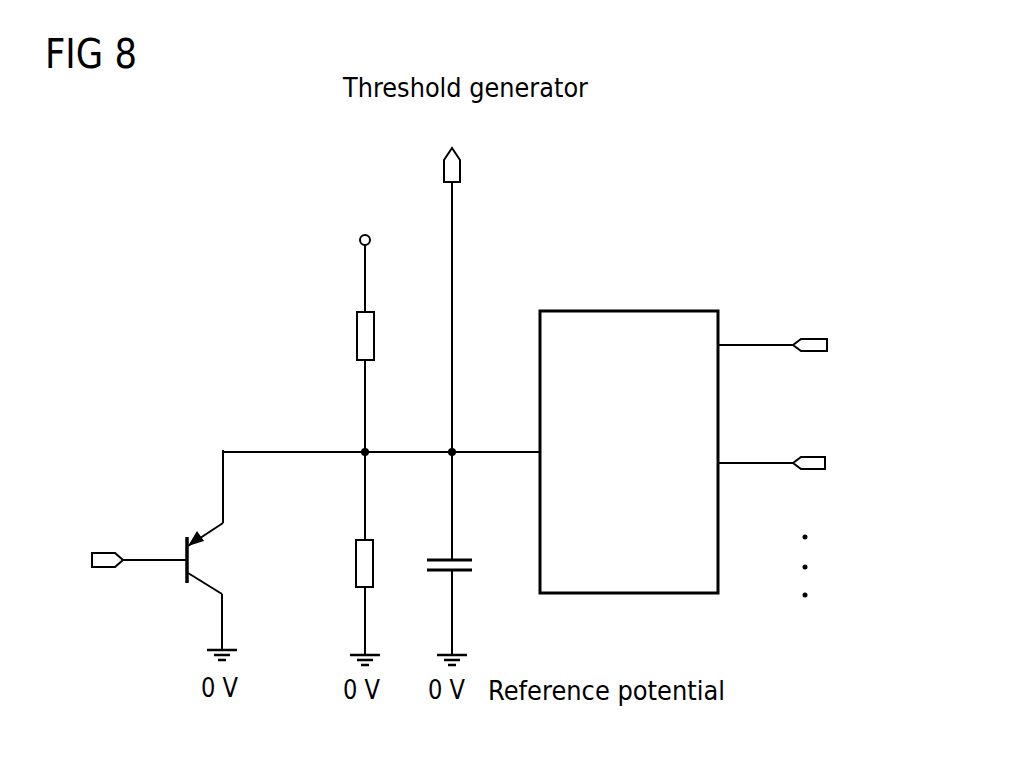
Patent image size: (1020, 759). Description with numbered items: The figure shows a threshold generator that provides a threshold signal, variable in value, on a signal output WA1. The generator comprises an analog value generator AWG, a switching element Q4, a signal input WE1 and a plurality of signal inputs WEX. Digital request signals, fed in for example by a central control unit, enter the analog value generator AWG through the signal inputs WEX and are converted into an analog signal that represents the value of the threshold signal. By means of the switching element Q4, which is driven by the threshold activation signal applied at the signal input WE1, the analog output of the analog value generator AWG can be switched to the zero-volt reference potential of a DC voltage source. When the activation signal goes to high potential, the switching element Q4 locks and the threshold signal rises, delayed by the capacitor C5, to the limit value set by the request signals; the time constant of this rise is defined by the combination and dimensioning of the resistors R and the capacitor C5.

The signal output WA1 is at (444, 171).
The signal input WE1 is at (109, 552).
The signal inputs WEX is at (807, 468).
The resistor R is at (357, 339).
The capacitor C5 is at (467, 558).
The switching element Q4 is at (183, 575).
The analog value generator AWG is at (629, 452).